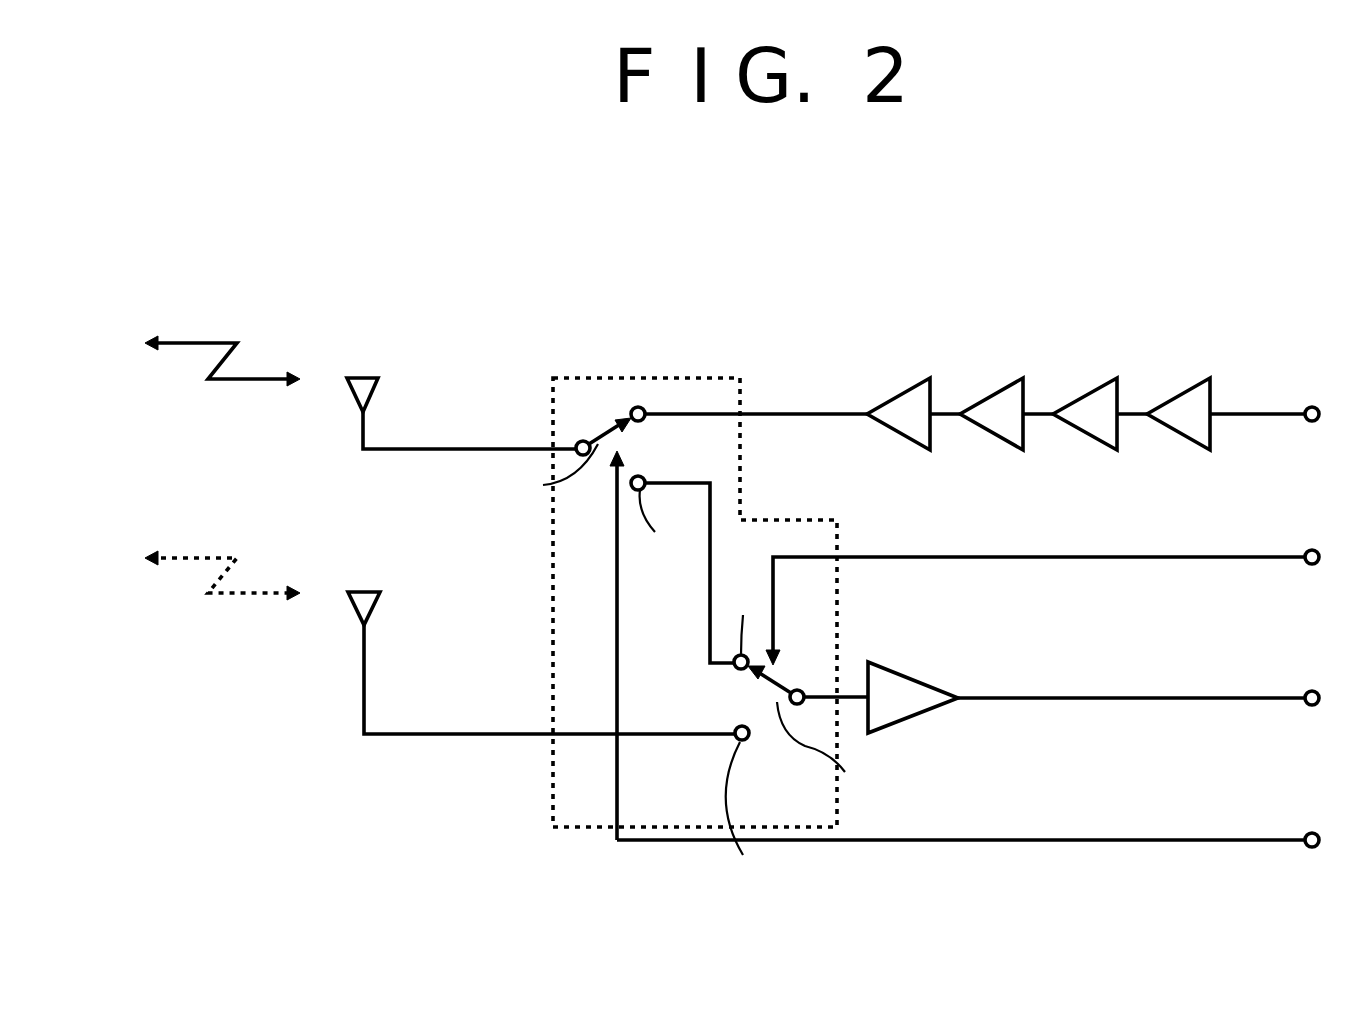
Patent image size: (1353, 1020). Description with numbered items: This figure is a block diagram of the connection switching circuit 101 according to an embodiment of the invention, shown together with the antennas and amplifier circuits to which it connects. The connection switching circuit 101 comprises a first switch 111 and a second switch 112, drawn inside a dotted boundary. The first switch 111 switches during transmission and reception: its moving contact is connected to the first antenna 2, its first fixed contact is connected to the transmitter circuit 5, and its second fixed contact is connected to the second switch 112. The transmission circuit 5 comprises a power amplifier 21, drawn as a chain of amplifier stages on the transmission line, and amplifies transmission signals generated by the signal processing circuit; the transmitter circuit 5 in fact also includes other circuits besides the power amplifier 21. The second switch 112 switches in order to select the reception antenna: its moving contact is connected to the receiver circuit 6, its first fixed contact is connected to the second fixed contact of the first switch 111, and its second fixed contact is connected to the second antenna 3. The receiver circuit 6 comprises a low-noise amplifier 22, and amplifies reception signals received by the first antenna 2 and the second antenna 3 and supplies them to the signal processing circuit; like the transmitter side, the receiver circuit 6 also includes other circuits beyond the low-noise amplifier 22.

The first antenna 2 is at (352, 393).
The second antenna 3 is at (352, 605).
The connection switching circuit 101 is at (552, 763).
The first switch 111 is at (597, 422).
The second switch 112 is at (728, 690).
The power amplifier 21 is at (1093, 368).
The transmission circuit 5 is at (1093, 414).
The low-noise amplifier 22 is at (1093, 708).
The receiver circuit 6 is at (915, 713).